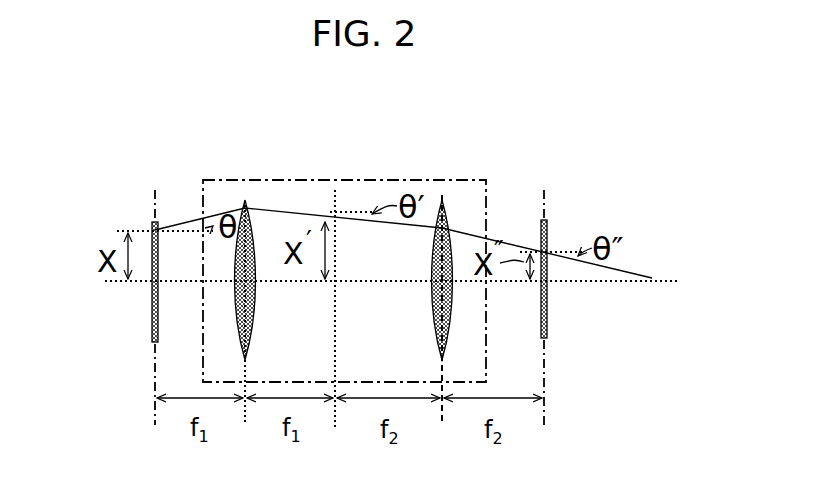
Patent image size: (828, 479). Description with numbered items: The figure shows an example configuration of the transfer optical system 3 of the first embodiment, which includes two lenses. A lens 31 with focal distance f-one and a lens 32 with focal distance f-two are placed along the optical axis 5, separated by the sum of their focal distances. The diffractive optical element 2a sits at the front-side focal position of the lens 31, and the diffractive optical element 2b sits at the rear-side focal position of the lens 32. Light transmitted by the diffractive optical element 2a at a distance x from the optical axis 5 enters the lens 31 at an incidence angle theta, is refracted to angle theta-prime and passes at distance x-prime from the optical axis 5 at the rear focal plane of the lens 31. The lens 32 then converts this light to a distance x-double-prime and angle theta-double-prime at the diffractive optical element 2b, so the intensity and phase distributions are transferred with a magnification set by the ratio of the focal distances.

The diffractive optical element 2a is at (152, 336).
The diffractive optical element 2b is at (548, 326).
The transfer optical system 3 is at (320, 180).
The lens 31 is at (246, 200).
The lens 32 is at (443, 200).
The optical axis 5 is at (655, 278).